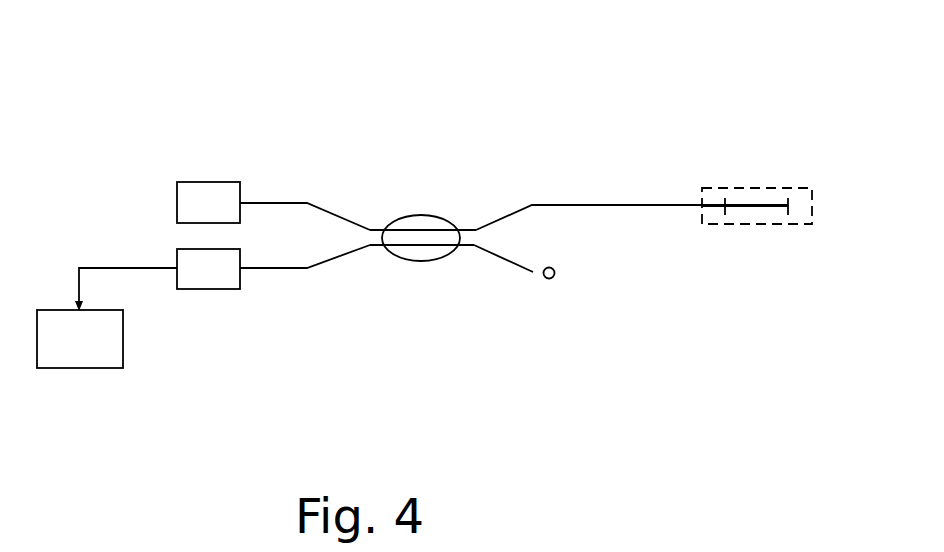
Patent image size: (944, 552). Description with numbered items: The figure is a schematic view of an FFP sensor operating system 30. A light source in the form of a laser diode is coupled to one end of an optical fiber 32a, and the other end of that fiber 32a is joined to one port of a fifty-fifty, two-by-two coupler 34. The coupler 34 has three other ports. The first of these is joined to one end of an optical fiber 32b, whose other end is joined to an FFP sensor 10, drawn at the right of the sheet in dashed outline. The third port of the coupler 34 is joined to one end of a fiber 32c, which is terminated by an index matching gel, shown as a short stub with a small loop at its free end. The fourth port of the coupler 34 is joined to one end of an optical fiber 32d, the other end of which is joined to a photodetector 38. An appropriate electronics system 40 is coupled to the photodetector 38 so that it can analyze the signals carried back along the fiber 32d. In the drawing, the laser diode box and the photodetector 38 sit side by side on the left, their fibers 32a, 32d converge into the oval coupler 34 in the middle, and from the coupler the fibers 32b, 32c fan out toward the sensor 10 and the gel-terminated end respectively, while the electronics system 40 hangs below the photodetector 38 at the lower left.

The FFP sensor 10 is at (785, 188).
The FFP sensor system 30 is at (263, 120).
The optical fiber 32a is at (328, 208).
The optical fiber 32b is at (548, 205).
The fiber 32c is at (499, 259).
The optical fiber 32d is at (330, 267).
The 2×2 coupler 34 is at (428, 214).
The photodetector 38 is at (193, 280).
The electronics system 40 is at (63, 357).